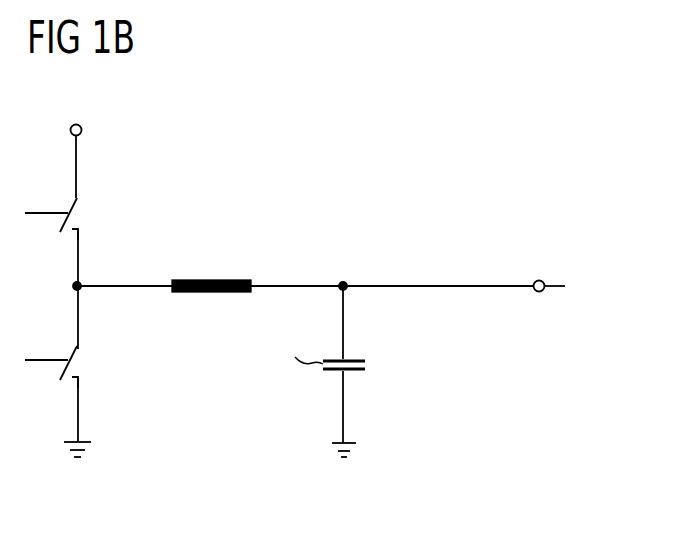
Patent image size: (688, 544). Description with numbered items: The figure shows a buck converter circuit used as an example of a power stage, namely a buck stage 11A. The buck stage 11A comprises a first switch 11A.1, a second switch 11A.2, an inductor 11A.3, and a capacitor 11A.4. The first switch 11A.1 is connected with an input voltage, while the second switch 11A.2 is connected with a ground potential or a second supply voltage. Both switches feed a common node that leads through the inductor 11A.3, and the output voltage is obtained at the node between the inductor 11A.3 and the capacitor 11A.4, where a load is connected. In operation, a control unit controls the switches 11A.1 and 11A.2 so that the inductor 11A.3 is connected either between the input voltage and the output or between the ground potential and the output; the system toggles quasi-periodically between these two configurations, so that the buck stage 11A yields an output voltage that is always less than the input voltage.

The buck stage 11A is at (518, 152).
The first switch 11A.1 is at (73, 208).
The second switch 11A.2 is at (73, 356).
The inductor 11A.3 is at (202, 320).
The capacitor 11A.4 is at (366, 364).